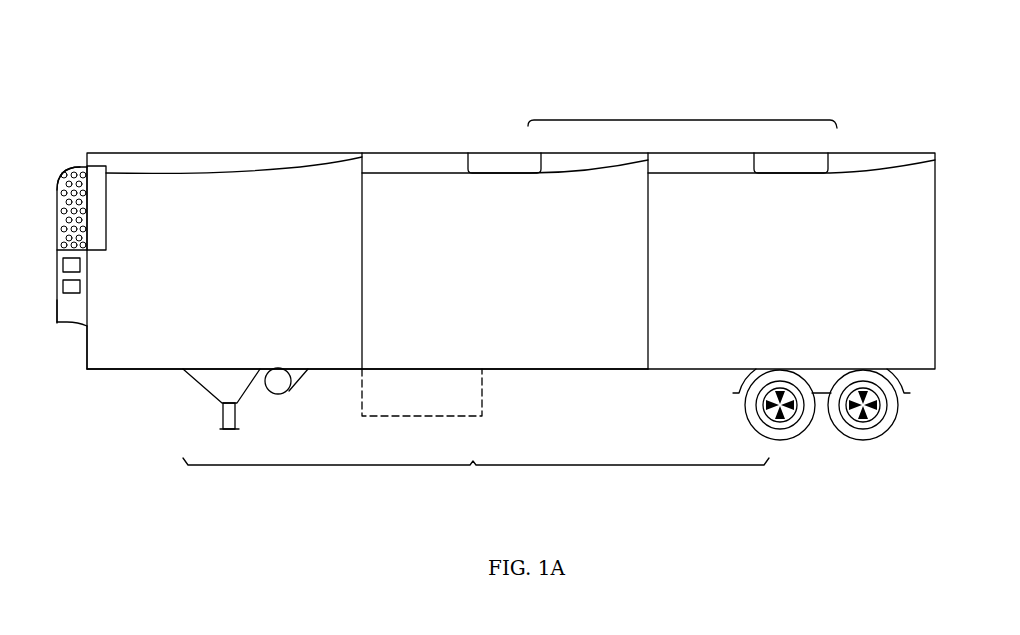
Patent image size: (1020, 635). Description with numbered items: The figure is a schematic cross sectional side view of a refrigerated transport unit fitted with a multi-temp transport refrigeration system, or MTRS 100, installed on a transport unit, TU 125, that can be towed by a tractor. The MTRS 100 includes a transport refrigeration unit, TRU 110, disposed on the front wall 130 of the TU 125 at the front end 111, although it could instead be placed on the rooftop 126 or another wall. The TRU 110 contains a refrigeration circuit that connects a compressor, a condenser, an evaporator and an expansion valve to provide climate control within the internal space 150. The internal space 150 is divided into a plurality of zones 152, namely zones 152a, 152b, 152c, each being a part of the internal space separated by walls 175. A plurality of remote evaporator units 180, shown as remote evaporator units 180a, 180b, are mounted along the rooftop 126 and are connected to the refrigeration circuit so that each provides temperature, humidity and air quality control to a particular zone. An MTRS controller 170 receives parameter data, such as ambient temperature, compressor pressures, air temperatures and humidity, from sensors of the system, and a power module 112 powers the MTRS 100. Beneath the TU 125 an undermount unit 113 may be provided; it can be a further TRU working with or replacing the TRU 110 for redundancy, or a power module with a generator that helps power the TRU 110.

The multi-temp transport refrigeration system (MTRS) 100 is at (329, 62).
The transport refrigeration unit (TRU) 110 is at (72, 323).
The front end 111 is at (53, 140).
The power module 112 is at (60, 294).
The undermount unit 113 is at (422, 418).
The transport unit (TU) 125 is at (873, 154).
The rooftop 126 is at (247, 153).
The front wall 130 is at (87, 359).
The internal space 150 is at (165, 350).
The zone 152 is at (473, 465).
The zone 152a is at (213, 357).
The zone 152b is at (538, 355).
The zone 152c is at (727, 357).
The MTRS controller 170 is at (63, 270).
The wall 175 is at (360, 197).
The remote evaporator unit 180 is at (682, 120).
The remote evaporator unit 180a is at (501, 160).
The remote evaporator unit 180b is at (777, 160).